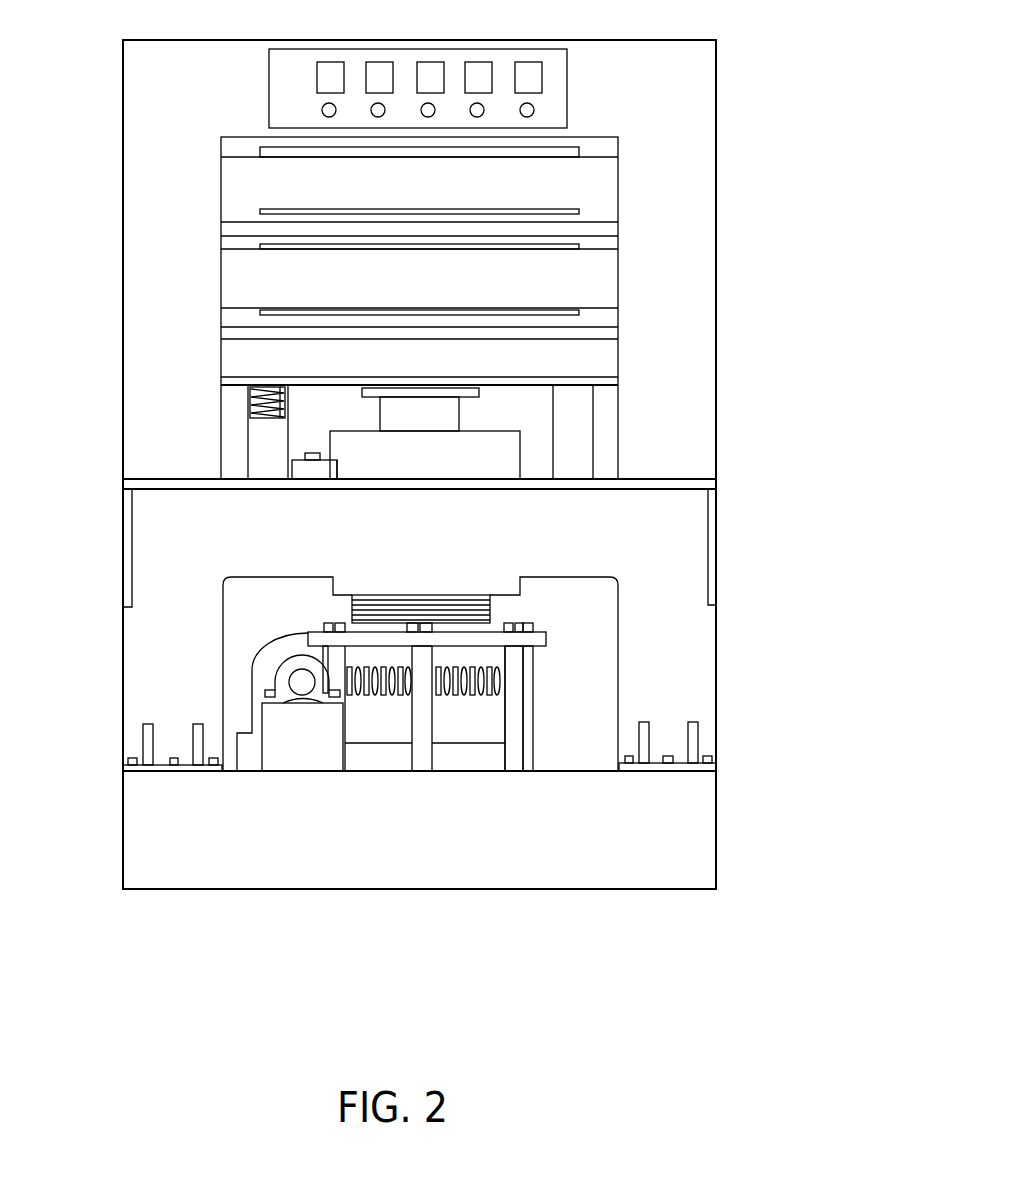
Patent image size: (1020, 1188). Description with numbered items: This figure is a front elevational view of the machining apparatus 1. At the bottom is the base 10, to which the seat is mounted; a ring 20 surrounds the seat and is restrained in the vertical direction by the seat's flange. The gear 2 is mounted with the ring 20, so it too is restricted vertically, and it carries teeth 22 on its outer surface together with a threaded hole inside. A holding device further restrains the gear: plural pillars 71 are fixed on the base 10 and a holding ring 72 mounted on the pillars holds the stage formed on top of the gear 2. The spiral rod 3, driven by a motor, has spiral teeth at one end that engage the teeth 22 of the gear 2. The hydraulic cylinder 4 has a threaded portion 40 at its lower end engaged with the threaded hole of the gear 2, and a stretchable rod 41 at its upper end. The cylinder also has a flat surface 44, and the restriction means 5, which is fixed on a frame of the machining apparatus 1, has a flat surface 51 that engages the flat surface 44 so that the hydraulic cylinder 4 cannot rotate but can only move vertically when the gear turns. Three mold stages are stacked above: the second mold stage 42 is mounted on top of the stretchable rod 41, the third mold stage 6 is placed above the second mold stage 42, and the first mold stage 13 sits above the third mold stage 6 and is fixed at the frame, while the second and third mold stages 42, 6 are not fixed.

The machining apparatus 1 is at (820, 408).
The gear 2 is at (473, 719).
The spiral rod 3 is at (302, 682).
The hydraulic cylinder 4 is at (493, 456).
The restriction means 5 is at (307, 468).
The third mold stage 6 is at (297, 232).
The base 10 is at (673, 840).
The first mold stage 13 is at (605, 147).
The ring 20 is at (482, 767).
The teeth 22 is at (507, 674).
The threaded portion 40 is at (490, 612).
The stretchable rod 41 is at (445, 412).
The second mold stage 42 is at (604, 318).
The flat surface 44 is at (285, 420).
The flat surface 51 is at (337, 467).
The pillars 71 is at (517, 738).
The holding ring 72 is at (535, 637).